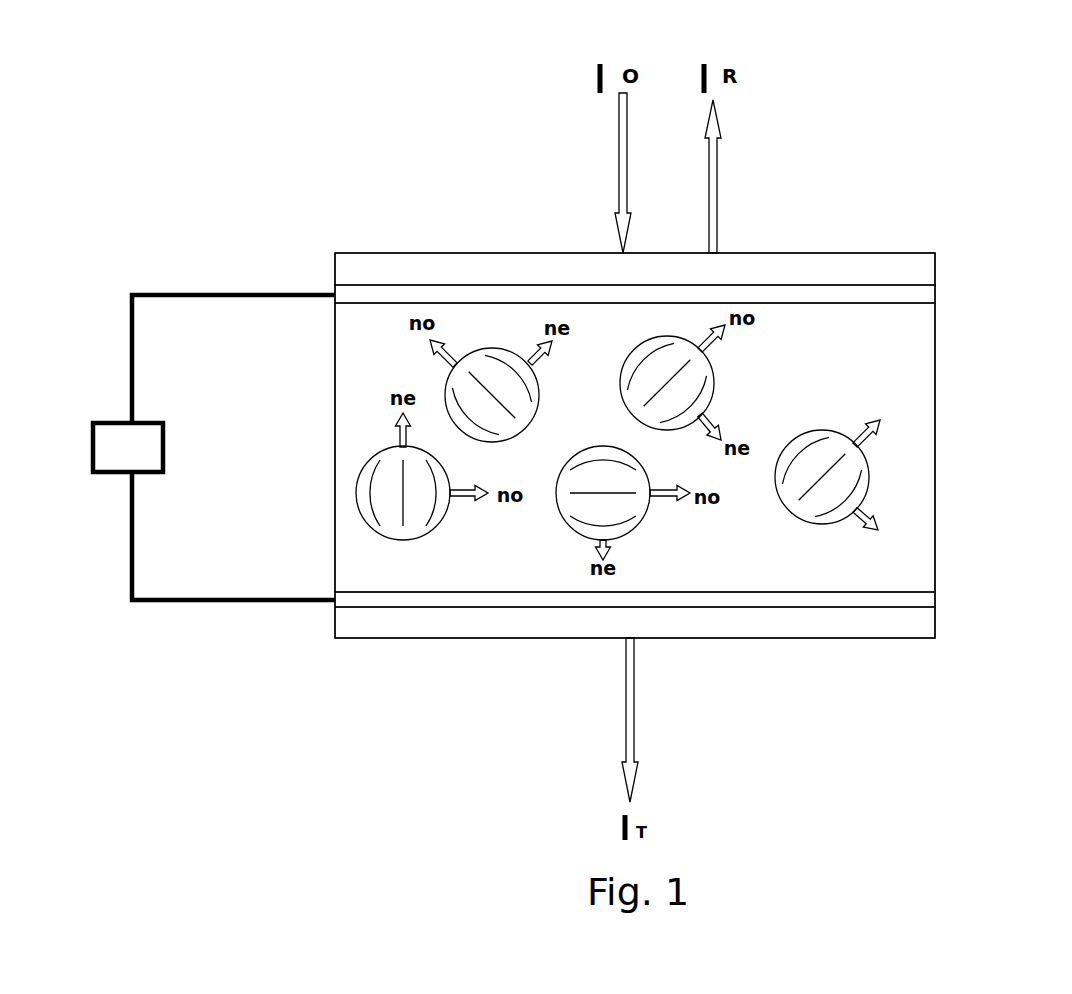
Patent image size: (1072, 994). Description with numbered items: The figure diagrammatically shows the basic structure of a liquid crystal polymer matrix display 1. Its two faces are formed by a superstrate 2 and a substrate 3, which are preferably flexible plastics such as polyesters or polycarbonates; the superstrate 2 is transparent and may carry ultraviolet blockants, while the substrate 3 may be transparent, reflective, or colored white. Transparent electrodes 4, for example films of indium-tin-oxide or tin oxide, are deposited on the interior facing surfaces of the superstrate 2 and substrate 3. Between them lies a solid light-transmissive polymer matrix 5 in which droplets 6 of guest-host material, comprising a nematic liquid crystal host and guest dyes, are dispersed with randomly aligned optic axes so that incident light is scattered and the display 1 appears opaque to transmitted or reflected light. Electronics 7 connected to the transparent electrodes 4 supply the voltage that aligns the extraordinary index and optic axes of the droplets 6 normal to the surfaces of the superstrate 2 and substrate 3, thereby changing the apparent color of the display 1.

The liquid crystal polymer matrix display 1 is at (417, 223).
The superstrate 2 is at (855, 268).
The substrate 3 is at (382, 622).
The transparent electrodes 4 is at (355, 292).
The polymer matrix 5 is at (895, 319).
The droplets 6 is at (857, 487).
The electronics 7 is at (146, 435).